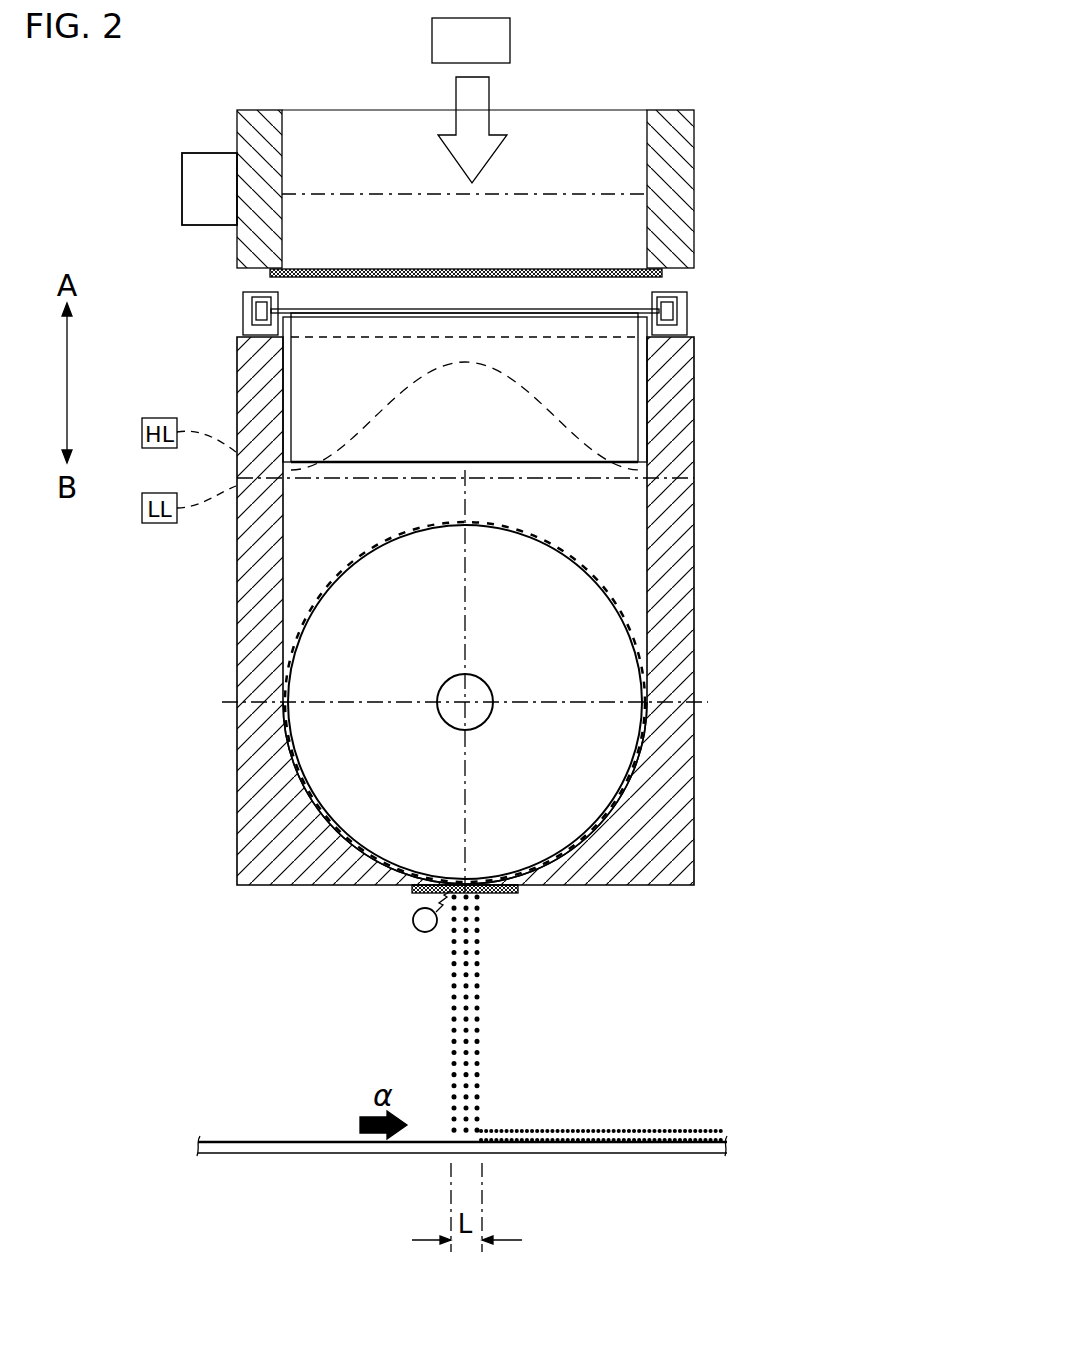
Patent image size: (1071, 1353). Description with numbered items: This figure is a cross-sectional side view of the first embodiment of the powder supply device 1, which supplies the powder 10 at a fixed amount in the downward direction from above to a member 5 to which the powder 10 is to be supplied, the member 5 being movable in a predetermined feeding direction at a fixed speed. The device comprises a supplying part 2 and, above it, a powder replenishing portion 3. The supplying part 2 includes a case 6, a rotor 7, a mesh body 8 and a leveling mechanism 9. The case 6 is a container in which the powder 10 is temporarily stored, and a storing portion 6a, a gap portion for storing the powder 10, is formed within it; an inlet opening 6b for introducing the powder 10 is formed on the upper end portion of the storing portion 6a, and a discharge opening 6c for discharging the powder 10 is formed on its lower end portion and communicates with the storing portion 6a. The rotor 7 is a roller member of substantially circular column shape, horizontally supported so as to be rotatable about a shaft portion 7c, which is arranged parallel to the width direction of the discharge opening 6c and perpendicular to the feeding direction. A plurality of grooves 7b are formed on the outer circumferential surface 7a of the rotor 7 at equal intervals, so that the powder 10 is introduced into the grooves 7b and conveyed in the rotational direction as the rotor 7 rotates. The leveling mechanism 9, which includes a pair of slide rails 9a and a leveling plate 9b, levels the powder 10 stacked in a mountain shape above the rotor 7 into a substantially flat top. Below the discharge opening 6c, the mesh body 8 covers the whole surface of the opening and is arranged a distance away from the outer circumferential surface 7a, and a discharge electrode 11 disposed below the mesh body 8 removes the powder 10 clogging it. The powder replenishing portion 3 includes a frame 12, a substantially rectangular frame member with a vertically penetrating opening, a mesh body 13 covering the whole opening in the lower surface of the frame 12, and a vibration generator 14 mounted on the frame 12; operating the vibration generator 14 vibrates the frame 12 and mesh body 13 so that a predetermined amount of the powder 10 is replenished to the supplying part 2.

The powder supply device 1 is at (170, 125).
The supplying part 2 is at (499, 580).
The powder replenishing portion 3 is at (471, 194).
The member to which the powder is to be supplied 5 is at (283, 1142).
The case 6 is at (425, 580).
The storing portion 6a is at (622, 790).
The inlet opening 6b is at (647, 367).
The discharge opening 6c is at (477, 878).
The rotor 7 is at (465, 681).
The outer circumferential surface 7a is at (388, 541).
The grooves 7b is at (412, 533).
The shaft portion 7c is at (490, 688).
The mesh body 8 is at (518, 893).
The leveling mechanism 9 is at (447, 350).
The slide rails 9a is at (243, 312).
The leveling plate 9b is at (625, 405).
The powder 10 is at (512, 42).
The discharge electrode 11 is at (412, 918).
The frame 12 is at (697, 137).
The mesh body 13 is at (662, 277).
The vibration generator 14 is at (182, 192).